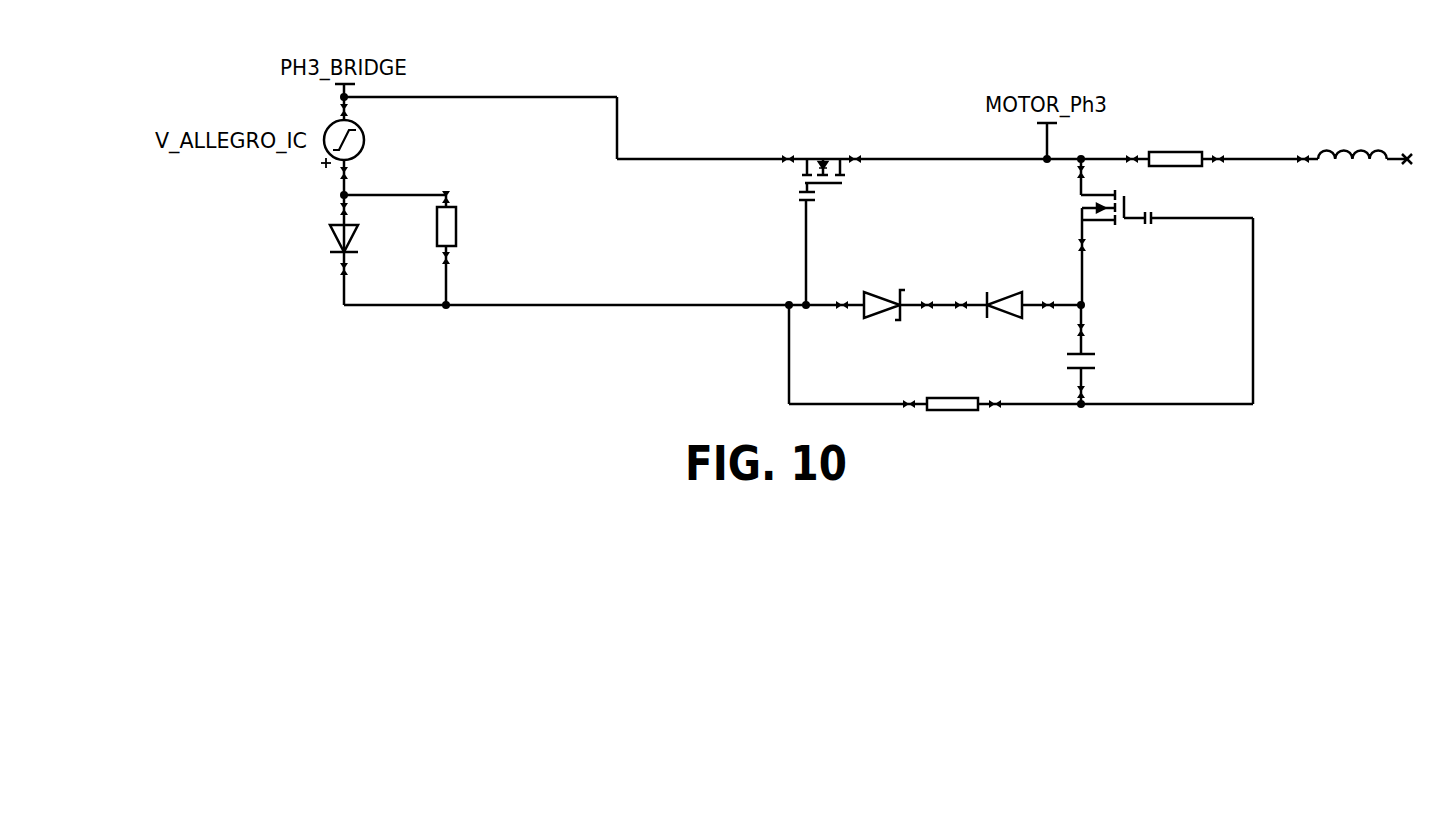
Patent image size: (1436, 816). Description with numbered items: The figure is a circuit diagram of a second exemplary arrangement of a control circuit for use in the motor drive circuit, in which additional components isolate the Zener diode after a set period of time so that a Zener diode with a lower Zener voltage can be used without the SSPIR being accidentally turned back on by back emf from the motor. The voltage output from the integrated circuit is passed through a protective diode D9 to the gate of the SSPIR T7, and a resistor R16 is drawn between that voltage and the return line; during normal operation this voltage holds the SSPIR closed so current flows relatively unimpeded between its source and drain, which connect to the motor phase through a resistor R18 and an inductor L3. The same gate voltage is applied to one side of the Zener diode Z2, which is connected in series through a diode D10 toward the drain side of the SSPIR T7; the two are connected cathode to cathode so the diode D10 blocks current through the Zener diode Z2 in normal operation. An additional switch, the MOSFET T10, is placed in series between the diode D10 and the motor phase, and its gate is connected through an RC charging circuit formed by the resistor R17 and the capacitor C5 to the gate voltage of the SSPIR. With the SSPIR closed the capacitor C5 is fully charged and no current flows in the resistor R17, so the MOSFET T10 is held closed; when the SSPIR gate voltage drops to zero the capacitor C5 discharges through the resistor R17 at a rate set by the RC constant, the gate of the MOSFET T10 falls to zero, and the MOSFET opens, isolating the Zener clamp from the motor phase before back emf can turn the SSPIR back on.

The diode D9 1N1183 D9 is at (282, 239).
The resistor R16 2.7k R16 is at (414, 247).
The MOSFET T7 STL285N4F7AG T7 is at (874, 216).
The zener diode Z2 1N4370 Z2 is at (907, 294).
The diode D10 1N1183 D10 is at (991, 317).
The resistor R17 10k R17 is at (952, 390).
The capacitor C5 100n C5 is at (1097, 356).
The MOSFET T10 2N6755 T10 is at (1165, 232).
The resistor R18 13m R18 is at (1222, 146).
The inductor L3 87.5U L3 is at (1354, 145).